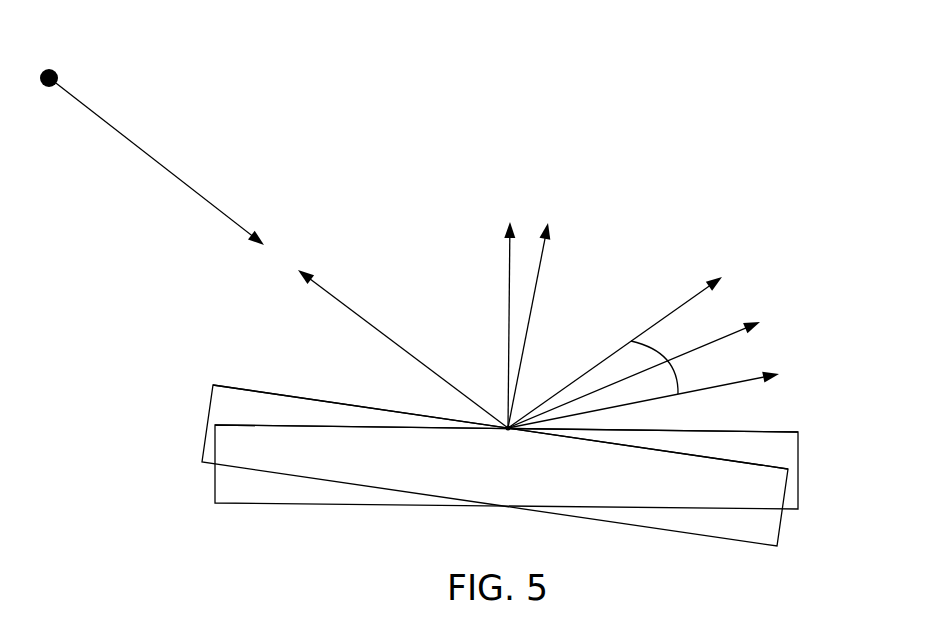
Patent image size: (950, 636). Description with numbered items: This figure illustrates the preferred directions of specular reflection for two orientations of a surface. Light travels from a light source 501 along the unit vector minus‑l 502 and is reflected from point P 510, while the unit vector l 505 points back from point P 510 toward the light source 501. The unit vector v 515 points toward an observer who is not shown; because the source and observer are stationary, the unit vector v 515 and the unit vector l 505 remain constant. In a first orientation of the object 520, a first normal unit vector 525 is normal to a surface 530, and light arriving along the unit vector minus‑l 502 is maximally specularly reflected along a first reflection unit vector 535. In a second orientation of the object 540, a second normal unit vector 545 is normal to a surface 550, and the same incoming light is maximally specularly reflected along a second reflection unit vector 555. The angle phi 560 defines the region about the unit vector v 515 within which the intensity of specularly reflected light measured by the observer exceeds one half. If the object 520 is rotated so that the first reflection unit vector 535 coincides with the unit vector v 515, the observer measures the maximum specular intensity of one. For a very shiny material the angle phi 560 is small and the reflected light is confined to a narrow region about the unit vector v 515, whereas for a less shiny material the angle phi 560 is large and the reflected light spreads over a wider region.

The light source 501 is at (58, 75).
The unit vector −l 502 is at (133, 143).
The unit vector l 505 is at (356, 312).
The point P 510 is at (510, 432).
The unit vector v 515 is at (713, 340).
The object 520 is at (800, 467).
The unit vector n1 525 is at (510, 280).
The surface 530 is at (778, 430).
The unit vector r1 535 is at (672, 312).
The object in second orientation 540 is at (783, 530).
The unit vector n2 545 is at (535, 300).
The surface 550 is at (288, 397).
The unit vector r2 555 is at (733, 383).
The angle φ 560 is at (677, 370).